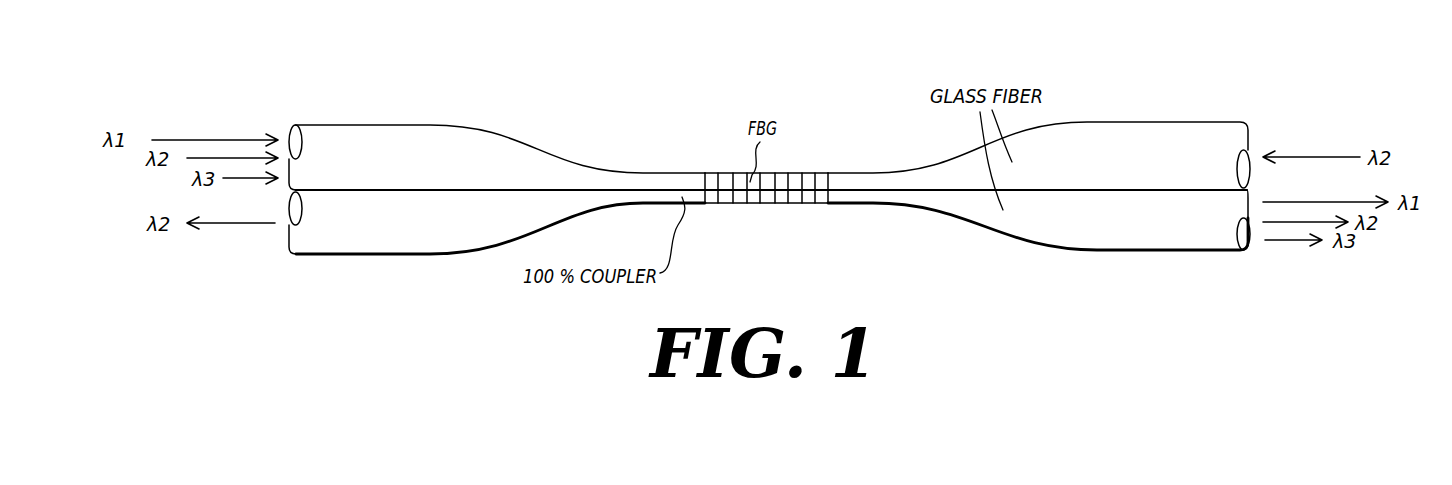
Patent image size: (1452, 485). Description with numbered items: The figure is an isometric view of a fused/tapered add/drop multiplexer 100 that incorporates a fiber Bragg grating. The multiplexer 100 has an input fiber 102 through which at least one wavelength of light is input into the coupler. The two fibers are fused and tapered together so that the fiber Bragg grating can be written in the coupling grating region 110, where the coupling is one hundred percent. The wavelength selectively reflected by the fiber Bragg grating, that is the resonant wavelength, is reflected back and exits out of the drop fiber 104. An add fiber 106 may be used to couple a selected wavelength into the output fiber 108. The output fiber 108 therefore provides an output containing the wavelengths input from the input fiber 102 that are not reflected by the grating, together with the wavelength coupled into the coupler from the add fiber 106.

The fused/tapered add/drop multiplexer 100 is at (1105, 65).
The input fiber 102 is at (412, 142).
The drop fiber 104 is at (422, 232).
The add fiber 106 is at (1137, 145).
The output fiber 108 is at (1138, 223).
The 100% coupling grating region 110 is at (768, 205).